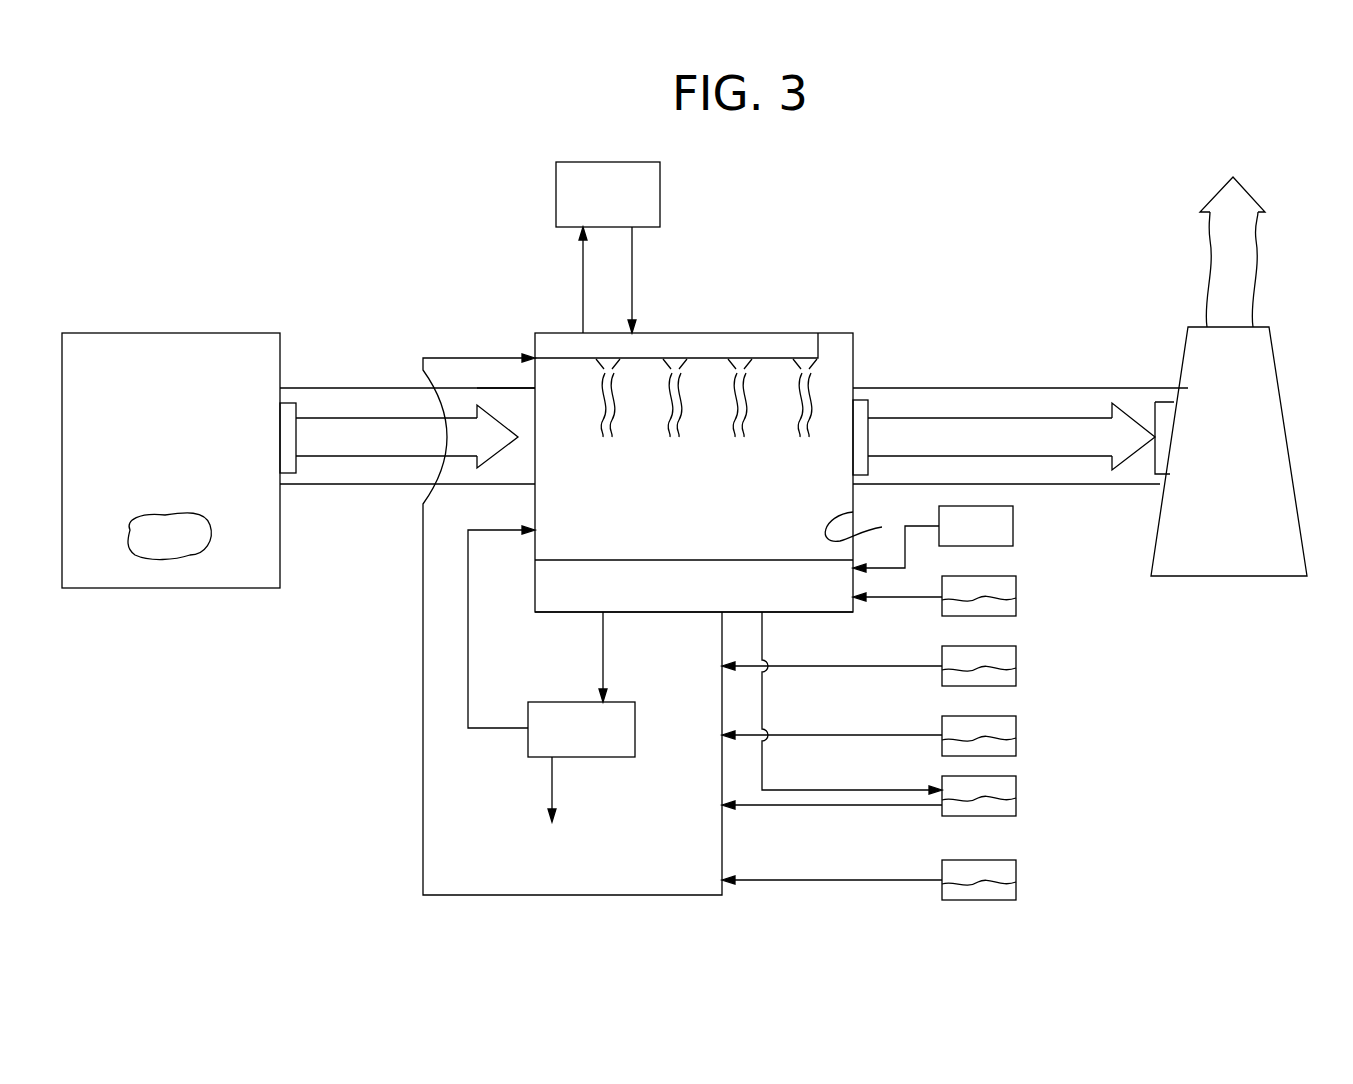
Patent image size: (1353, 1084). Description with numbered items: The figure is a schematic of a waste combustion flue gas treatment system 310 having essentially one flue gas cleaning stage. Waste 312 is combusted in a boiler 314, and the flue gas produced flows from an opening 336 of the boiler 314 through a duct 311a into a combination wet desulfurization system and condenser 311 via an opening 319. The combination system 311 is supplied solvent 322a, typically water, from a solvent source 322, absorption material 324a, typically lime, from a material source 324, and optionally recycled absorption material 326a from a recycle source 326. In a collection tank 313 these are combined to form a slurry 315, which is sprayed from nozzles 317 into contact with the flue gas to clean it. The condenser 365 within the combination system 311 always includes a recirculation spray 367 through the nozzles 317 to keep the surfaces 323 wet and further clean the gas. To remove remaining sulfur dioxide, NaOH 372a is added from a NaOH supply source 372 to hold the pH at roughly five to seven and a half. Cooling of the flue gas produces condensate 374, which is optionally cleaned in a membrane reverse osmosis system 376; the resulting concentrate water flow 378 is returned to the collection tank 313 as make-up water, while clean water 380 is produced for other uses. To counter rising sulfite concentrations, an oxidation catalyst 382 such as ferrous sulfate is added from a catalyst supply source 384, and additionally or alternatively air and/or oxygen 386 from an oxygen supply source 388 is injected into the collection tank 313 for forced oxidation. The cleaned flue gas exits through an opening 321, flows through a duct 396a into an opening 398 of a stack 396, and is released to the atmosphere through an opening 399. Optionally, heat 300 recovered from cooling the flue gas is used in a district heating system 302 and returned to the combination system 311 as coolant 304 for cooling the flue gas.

The heat 300 is at (583, 288).
The district heating system 302 is at (612, 170).
The coolant 304 is at (634, 250).
The waste combustion flue gas treatment system 310 is at (725, 220).
The combination wet desulfurization system and condenser 311 is at (750, 357).
The duct 311a is at (383, 388).
The waste 312 is at (172, 565).
The collection tank 313 is at (585, 602).
The boiler 314 is at (190, 345).
The slurry 315 is at (770, 398).
The nozzles 317 is at (620, 360).
The opening 319 is at (498, 388).
The opening 321 is at (868, 408).
The solvent source 322 is at (1016, 652).
The solvent 322a is at (1005, 680).
The surfaces 323 is at (867, 517).
The material source 324 is at (1016, 730).
The absorption material 324a is at (1005, 750).
The recycle source 326 is at (1016, 790).
The recycled absorption material 326a is at (1005, 812).
The opening 336 is at (299, 407).
The condenser 365 is at (698, 358).
The recirculation spray 367 is at (423, 672).
The NaOH supply source 372 is at (1016, 880).
The NaOH 372a is at (988, 895).
The condensate 374 is at (603, 660).
The membrane reverse osmosis system 376 is at (582, 758).
The concentrate water flow 378 is at (498, 728).
The clean water 380 is at (548, 806).
The oxidation catalyst 382 is at (1005, 605).
The catalyst supply source 384 is at (990, 574).
The air and/or oxygen 386 is at (990, 526).
The oxygen supply source 388 is at (1013, 538).
The stack 396 is at (1280, 396).
The duct 396a is at (990, 388).
The opening 398 is at (1150, 462).
The opening 399 is at (1265, 322).